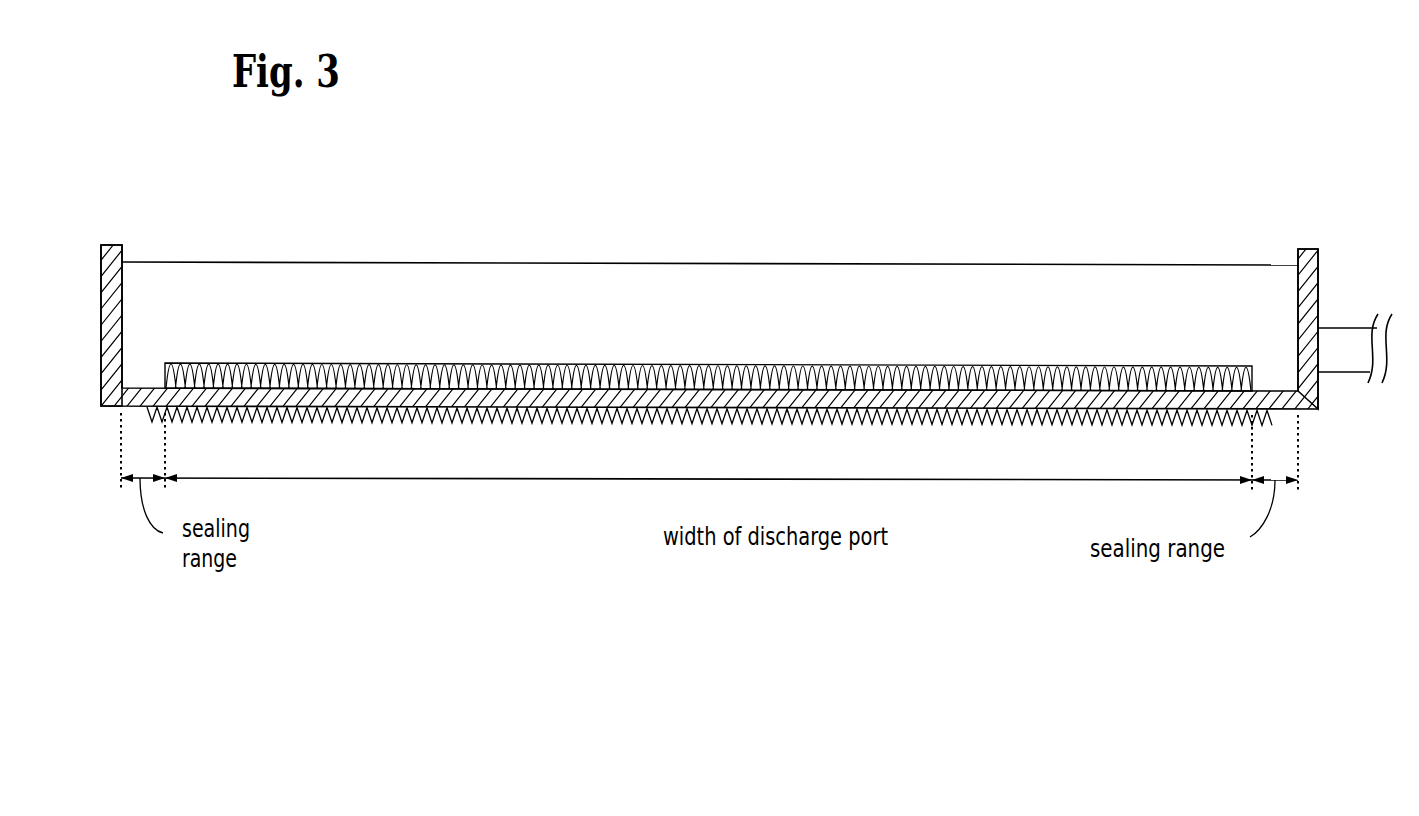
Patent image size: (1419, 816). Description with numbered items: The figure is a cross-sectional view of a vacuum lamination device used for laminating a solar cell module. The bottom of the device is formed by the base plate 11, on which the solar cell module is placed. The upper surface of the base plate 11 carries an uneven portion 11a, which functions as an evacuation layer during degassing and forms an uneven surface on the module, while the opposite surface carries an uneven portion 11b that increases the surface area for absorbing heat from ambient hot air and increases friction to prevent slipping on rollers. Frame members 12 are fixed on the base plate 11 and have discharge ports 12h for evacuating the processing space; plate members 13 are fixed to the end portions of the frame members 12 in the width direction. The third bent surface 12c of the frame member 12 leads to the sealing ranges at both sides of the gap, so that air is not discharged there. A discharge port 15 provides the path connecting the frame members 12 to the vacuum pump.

The base plate 11 is at (528, 385).
The uneven portion 11a is at (563, 367).
The uneven portion 11b is at (563, 420).
The frame member 12 is at (719, 262).
The third bent surface 12c is at (870, 290).
The discharge port 12h is at (982, 365).
The plate member 13 is at (114, 245).
The discharge port 15 is at (1339, 360).